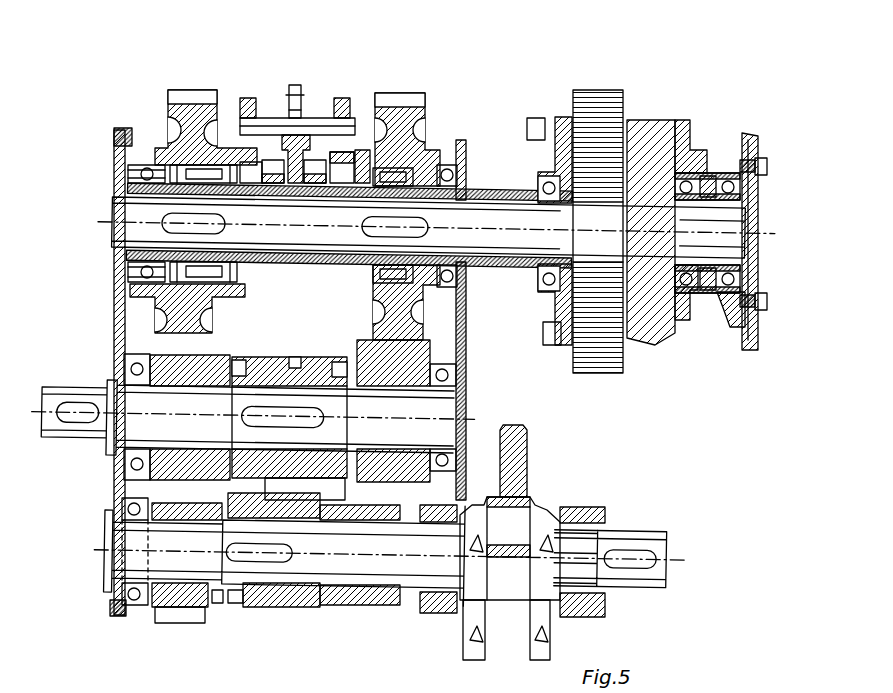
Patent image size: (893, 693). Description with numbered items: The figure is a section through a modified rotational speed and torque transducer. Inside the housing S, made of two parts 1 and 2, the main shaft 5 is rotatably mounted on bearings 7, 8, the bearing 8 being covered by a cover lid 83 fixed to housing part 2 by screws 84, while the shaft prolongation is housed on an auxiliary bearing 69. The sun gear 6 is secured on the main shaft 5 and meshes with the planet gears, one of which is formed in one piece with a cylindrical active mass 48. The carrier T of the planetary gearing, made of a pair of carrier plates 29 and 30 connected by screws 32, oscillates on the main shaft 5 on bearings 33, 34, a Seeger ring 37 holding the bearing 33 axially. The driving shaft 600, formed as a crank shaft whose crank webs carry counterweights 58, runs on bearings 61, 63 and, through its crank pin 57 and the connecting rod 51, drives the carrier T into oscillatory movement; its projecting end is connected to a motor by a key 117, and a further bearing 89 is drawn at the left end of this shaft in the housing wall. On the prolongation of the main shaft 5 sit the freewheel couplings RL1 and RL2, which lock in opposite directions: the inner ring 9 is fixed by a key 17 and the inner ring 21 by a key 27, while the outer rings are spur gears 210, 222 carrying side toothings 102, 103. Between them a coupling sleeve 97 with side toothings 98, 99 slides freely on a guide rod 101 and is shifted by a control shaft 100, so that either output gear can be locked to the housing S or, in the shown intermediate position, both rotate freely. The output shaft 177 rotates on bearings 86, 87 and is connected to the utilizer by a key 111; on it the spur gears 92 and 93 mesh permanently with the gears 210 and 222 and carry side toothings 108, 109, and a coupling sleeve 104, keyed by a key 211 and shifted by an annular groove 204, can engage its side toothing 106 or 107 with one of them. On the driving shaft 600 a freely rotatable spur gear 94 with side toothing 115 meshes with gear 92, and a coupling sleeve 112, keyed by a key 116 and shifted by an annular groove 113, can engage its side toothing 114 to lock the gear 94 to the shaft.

The housing part 1 is at (467, 152).
The housing part 2 is at (746, 133).
The main shaft 5 is at (706, 292).
The sun gear 6 is at (642, 135).
The bearing 7 is at (460, 172).
The bearing 8 is at (720, 173).
The inner ring 9 is at (186, 186).
The key 17 is at (130, 234).
The inner ring 21 is at (402, 185).
The key 27 is at (428, 228).
The carrier plate 29 is at (543, 163).
The carrier plate 30 is at (690, 125).
The screws 32 is at (540, 118).
The bearing 33 is at (546, 279).
The bearing 34 is at (688, 305).
The Seeger ring 37 is at (562, 208).
The active mass 48 is at (600, 90).
The connecting rod 51 is at (520, 450).
The crank pin 57 is at (532, 500).
The counterweights 58 is at (526, 645).
The bearing 61 is at (432, 612).
The bearing 63 is at (592, 618).
The auxiliary bearing 69 is at (130, 271).
The cover lid 83 is at (770, 310).
The screws 84 is at (764, 158).
The bearing 86 is at (130, 371).
The bearing 87 is at (457, 383).
The lower shaft bearing 89 is at (130, 595).
The spur gear 92 is at (182, 376).
The spur gear 93 is at (452, 365).
The spur gear 94 is at (177, 623).
The coupling sleeve 97 is at (295, 186).
The side toothing 98 is at (273, 160).
The side toothing 99 is at (313, 160).
The control shaft 100 is at (295, 88).
The guide rod 101 is at (360, 150).
The side toothing 102 is at (251, 186).
The side toothing 103 is at (343, 186).
The coupling sleeve 104 is at (263, 360).
The side toothing 106 is at (240, 360).
The side toothing 107 is at (337, 362).
The side toothing 108 is at (227, 444).
The side toothing 109 is at (346, 480).
The key 111 is at (74, 406).
The coupling sleeve 112 is at (322, 606).
The annular groove 113 is at (270, 608).
The side toothing 114 is at (234, 604).
The side toothing 115 is at (218, 604).
The key 116 is at (300, 565).
The key 117 is at (634, 558).
The output shaft 177 is at (96, 444).
The annular groove 204 is at (297, 357).
The spur gear 210 is at (207, 90).
The key 211 is at (331, 419).
The spur gear 222 is at (425, 102).
The driving shaft 600 is at (118, 538).
The freewheel coupling RL1 is at (200, 90).
The freewheel coupling RL2 is at (432, 93).
The housing S is at (122, 130).
The carrier T is at (525, 305).